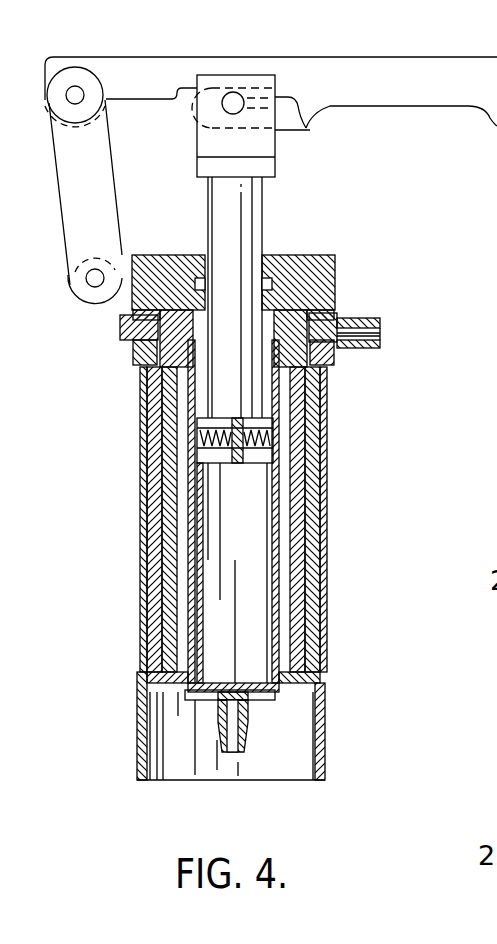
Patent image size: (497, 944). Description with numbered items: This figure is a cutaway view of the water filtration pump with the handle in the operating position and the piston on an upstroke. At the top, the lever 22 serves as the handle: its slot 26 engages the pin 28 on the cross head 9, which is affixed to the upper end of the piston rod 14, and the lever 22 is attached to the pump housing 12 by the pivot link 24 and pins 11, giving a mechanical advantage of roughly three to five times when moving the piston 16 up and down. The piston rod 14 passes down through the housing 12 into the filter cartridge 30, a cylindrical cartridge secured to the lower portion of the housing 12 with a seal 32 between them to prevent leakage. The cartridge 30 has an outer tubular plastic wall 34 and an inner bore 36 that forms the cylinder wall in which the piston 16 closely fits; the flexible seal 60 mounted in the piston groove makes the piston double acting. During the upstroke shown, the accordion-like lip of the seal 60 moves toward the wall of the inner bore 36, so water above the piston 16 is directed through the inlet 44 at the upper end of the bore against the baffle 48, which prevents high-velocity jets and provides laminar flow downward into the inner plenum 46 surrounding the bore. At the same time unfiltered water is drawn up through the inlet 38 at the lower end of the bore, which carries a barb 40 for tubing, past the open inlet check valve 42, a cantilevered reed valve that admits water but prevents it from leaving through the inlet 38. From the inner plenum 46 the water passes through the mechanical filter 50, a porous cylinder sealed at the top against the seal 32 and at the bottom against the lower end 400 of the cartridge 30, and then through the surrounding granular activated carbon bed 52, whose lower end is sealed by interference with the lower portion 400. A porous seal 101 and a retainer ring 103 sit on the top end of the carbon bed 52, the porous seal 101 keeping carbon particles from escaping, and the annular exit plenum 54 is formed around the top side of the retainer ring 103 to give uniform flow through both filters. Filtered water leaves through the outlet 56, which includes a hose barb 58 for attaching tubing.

The cross head 9 is at (197, 143).
The pins 11 is at (84, 96).
The pump housing 12 is at (302, 254).
The piston rod 14 is at (264, 220).
The piston 16 is at (278, 480).
The lever 22 is at (271, 70).
The pivot link 24 is at (115, 188).
The slot 26 is at (310, 130).
The pin 28 is at (222, 104).
The filter cartridge 30 is at (120, 546).
The seal 32 is at (328, 290).
The outer tubular plastic wall 34 is at (328, 718).
The inner bore 36 is at (232, 552).
The inlet 38 is at (248, 714).
The barb 40 is at (217, 737).
The inlet check valve 42 is at (147, 656).
The inlet 44 is at (198, 337).
The inner plenum 46 is at (140, 508).
The baffle 48 is at (180, 356).
The mechanical filter 50 is at (147, 620).
The granular activated carbon bed 52 is at (147, 600).
The exit plenum 54 is at (120, 328).
The outlet 56 is at (380, 330).
The hose barb 58 is at (372, 318).
The flexible seal 60 is at (276, 436).
The porous seal 101 is at (160, 368).
The retainer ring 103 is at (133, 350).
The lower end 400 is at (322, 735).